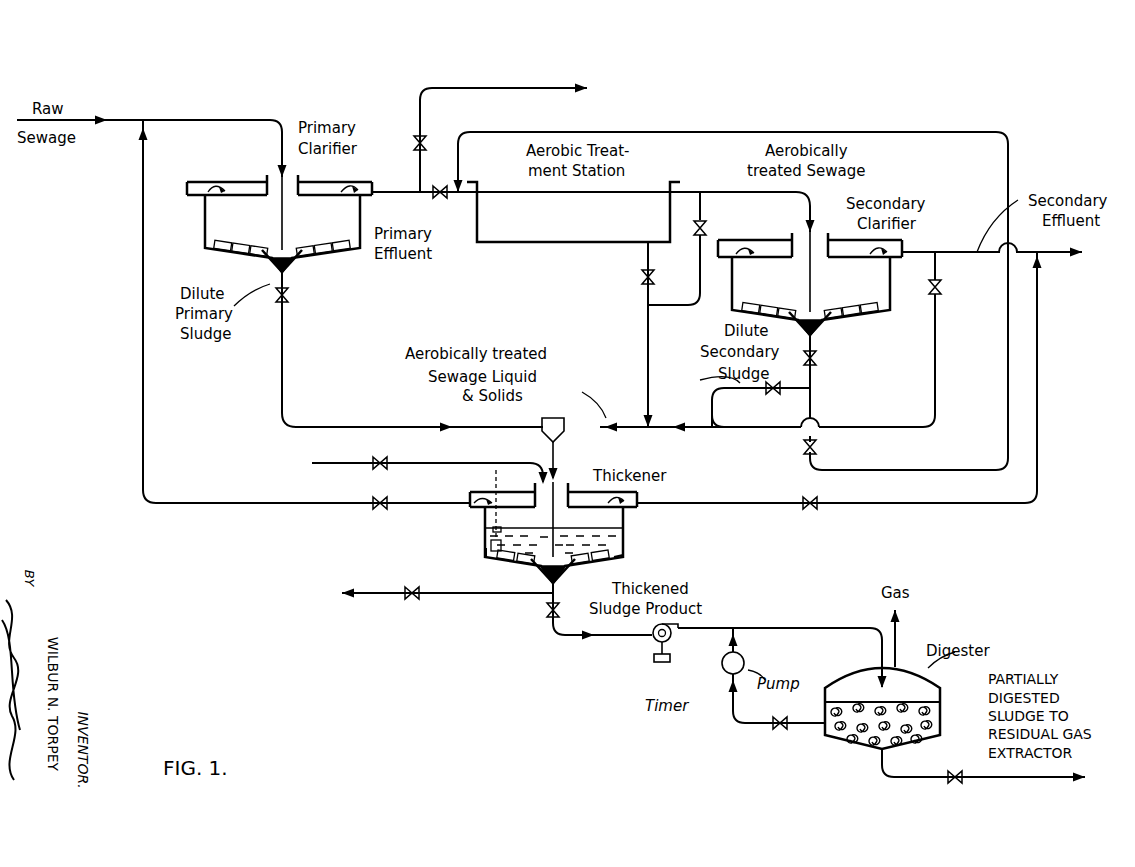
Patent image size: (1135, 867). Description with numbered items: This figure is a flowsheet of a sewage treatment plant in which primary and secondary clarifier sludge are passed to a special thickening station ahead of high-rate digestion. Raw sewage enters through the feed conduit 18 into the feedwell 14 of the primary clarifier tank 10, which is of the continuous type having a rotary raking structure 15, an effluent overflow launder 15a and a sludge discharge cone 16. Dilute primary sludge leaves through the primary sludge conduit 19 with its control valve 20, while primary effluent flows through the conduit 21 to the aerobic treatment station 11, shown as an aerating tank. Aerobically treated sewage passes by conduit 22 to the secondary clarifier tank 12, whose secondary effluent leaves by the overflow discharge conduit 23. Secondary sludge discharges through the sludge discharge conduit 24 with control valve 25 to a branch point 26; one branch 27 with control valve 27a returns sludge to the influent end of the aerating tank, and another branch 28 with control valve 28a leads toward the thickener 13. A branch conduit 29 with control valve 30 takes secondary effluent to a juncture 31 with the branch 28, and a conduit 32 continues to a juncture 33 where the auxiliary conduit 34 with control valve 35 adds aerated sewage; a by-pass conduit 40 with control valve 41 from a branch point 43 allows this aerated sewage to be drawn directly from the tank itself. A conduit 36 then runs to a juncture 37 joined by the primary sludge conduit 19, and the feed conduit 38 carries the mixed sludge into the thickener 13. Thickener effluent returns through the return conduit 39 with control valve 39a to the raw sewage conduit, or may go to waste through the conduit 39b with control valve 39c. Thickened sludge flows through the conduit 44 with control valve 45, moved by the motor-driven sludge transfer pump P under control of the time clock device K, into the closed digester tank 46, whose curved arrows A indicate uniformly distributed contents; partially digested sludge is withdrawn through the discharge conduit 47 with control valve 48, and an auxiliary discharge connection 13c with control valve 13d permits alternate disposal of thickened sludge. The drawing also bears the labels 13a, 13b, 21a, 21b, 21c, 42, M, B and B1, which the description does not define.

The primary clarifier tank 10 is at (261, 215).
The aerobic treatment station 11 is at (507, 246).
The secondary clarifier tank 12 is at (731, 286).
The thickener 13 is at (555, 527).
The thickener inlet line 13a is at (334, 461).
The valve in thickener inlet line 13b is at (390, 461).
The auxiliary discharge connection 13c is at (490, 596).
The control valve 13d is at (408, 602).
The feedwell 14 is at (268, 178).
The rotary raking structure 15 is at (310, 244).
The effluent overflow launder 15a is at (191, 186).
The sludge discharge cone 16 is at (296, 264).
The feed conduit 18 is at (174, 119).
The primary sludge conduit 19 is at (286, 340).
The control valve 20 is at (292, 298).
The conduit 21 is at (408, 190).
The bypass valve 21a is at (414, 131).
The bypass line 21b is at (426, 143).
The valve in primary effluent line 21c is at (446, 185).
The conduit 22 is at (723, 189).
The overflow discharge conduit 23 is at (920, 254).
The sludge discharge conduit 24 is at (812, 388).
The control valve 25 is at (818, 360).
The branch point 26 is at (812, 395).
The branch 27 is at (908, 469).
The control valve 27a is at (818, 449).
The branch 28 is at (716, 388).
The control valve 28a is at (768, 394).
The branch conduit 29 is at (937, 340).
The control valve 30 is at (941, 285).
The juncture 31 is at (710, 432).
The conduit 32 is at (694, 432).
The juncture 33 is at (650, 436).
The auxiliary conduit 34 is at (646, 343).
The control valve 35 is at (640, 277).
The conduit 36 is at (640, 420).
The juncture 37 is at (565, 432).
The feed conduit 38 is at (551, 458).
The return conduit 39 is at (298, 502).
The control valve 39a is at (378, 512).
The conduit 39b is at (932, 506).
The control valve 39c is at (806, 510).
The by-pass conduit 40 is at (697, 252).
The control valve 41 is at (707, 231).
The return line inlet 42 is at (698, 190).
The branch point 43 is at (650, 308).
The conduit 44 is at (620, 638).
The control valve 45 is at (546, 616).
The digester tank 46 is at (940, 706).
The discharge conduit 47 is at (914, 779).
The control valve 48 is at (951, 788).
The motor M is at (488, 545).
The thickener bottom B is at (622, 553).
The thickener bottom drive B1 is at (486, 555).
The sludge transfer pump P is at (671, 639).
The time clock device K is at (653, 662).
The curved arrows A is at (883, 716).